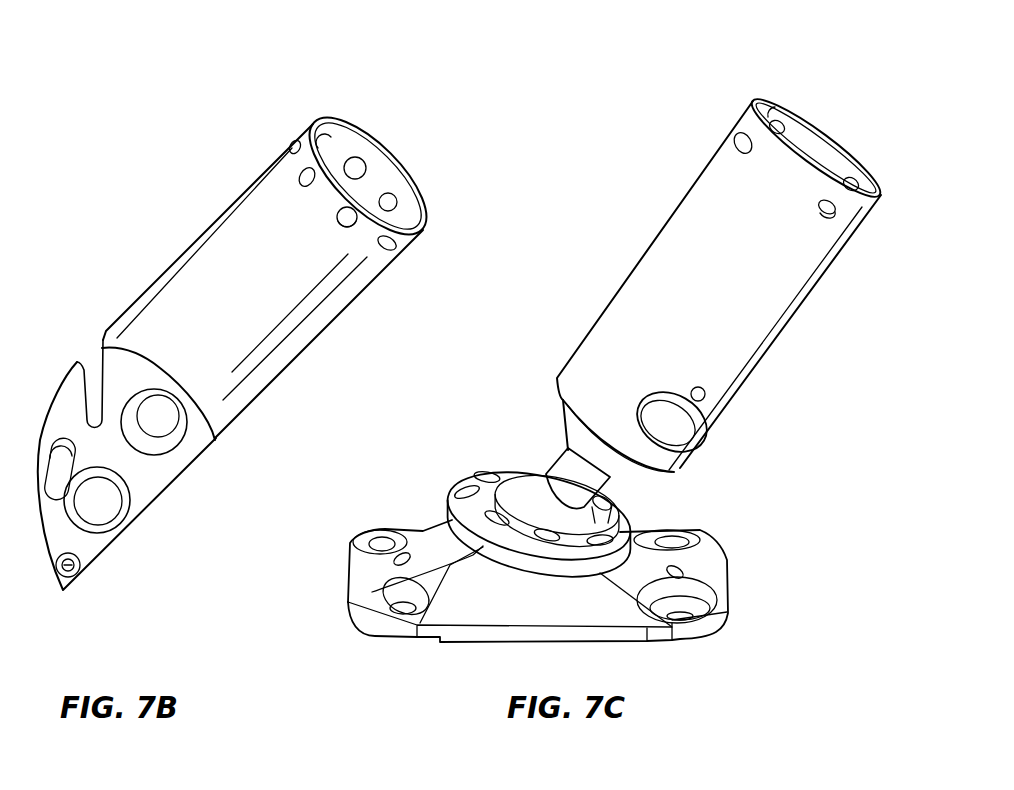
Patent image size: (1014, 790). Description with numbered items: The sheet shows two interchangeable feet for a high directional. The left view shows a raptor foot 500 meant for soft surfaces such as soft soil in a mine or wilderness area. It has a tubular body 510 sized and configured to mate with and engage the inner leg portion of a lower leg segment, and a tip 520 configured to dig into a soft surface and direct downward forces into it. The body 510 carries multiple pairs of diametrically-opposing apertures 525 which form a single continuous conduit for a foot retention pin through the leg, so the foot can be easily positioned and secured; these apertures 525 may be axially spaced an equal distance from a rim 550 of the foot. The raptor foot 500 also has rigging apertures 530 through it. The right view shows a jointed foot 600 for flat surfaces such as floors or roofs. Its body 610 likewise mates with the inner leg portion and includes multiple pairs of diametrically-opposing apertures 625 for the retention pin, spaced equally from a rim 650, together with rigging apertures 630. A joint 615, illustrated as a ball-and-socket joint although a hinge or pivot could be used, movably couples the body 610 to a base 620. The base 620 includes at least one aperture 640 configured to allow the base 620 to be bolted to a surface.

In FIG. 7B, the raptor foot 500 is at (219, 190).
In FIG. 7B, the body 510 is at (288, 330).
In FIG. 7B, the tip 520 is at (83, 544).
In FIG. 7B, the diametrically-opposing apertures 525 is at (356, 168).
In FIG. 7B, the rigging apertures 530 is at (160, 421).
In FIG. 7B, the rim 550 is at (324, 120).
In FIG. 7C, the jointed foot 600 is at (645, 188).
In FIG. 7C, the body 610 is at (764, 315).
In FIG. 7C, the joint 615 is at (638, 510).
In FIG. 7C, the base 620 is at (607, 613).
In FIG. 7C, the diametrically-opposing apertures 625 is at (838, 212).
In FIG. 7C, the rigging apertures 630 is at (672, 423).
In FIG. 7C, the aperture 640 is at (729, 611).
In FIG. 7C, the rim 650 is at (767, 98).